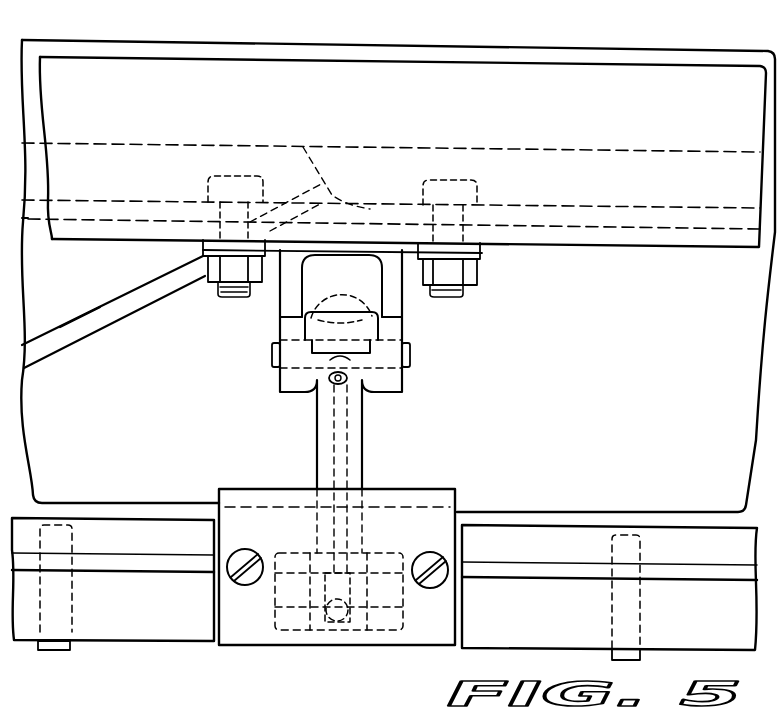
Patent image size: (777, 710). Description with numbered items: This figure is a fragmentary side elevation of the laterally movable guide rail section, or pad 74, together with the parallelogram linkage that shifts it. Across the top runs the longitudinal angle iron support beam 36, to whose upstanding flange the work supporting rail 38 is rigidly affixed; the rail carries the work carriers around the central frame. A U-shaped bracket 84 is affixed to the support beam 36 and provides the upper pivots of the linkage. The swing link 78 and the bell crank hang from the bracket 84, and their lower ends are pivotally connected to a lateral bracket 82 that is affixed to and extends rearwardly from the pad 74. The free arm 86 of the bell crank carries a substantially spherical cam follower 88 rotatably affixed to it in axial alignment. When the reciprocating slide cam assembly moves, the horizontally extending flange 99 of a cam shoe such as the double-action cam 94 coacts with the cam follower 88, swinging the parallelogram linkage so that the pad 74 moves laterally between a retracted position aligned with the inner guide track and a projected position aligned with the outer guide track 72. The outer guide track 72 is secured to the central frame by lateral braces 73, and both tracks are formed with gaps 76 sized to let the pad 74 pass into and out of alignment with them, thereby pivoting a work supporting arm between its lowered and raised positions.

The longitudinal angle iron support beam 36 is at (283, 49).
The work supporting rail 38 is at (609, 197).
The U-shaped bracket 84 is at (398, 308).
The free arm 86 is at (312, 304).
The spherical cam follower 88 is at (305, 268).
The double-action cam 94 is at (40, 323).
The flange 99 is at (78, 326).
The swing link 78 is at (357, 440).
The pad 74 is at (432, 497).
The gap 76 is at (455, 537).
The lateral bracket 82 is at (293, 631).
The outer guide track 72 is at (117, 528).
The lateral brace 73 is at (62, 651).